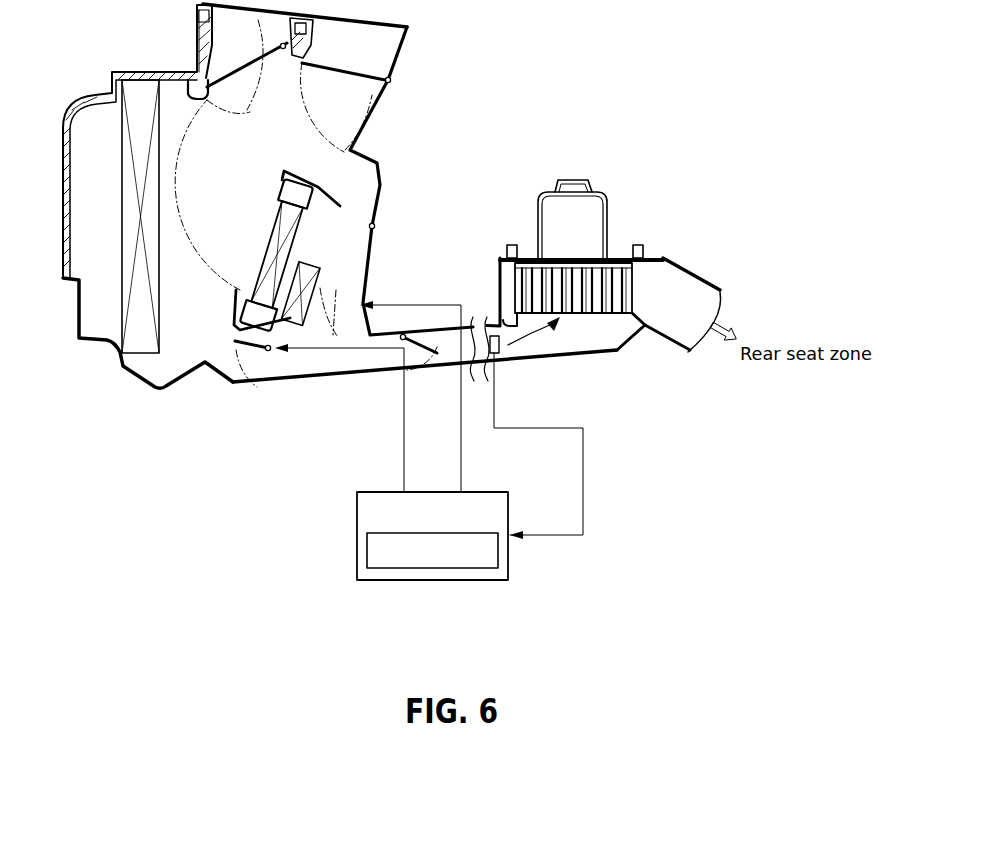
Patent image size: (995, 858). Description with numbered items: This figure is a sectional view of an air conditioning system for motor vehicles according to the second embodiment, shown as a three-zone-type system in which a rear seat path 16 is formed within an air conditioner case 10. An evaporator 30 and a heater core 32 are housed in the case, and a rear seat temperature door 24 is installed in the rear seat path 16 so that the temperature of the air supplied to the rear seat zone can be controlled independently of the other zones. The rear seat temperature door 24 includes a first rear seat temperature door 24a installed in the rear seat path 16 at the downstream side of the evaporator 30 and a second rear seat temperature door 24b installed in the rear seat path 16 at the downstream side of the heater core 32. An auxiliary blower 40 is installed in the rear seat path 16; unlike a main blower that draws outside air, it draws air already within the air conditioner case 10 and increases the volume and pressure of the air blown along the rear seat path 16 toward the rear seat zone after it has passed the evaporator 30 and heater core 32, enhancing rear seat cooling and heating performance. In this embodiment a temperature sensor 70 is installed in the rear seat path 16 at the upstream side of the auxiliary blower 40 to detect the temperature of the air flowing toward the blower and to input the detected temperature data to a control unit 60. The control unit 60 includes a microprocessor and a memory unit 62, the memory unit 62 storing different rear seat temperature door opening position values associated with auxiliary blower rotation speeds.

The air conditioner case 10 is at (85, 100).
The rear seat path 16 is at (393, 360).
The rear seat temperature door 24 is at (336, 399).
The first rear seat temperature door 24a is at (252, 350).
The second rear seat temperature door 24b is at (333, 332).
The evaporator 30 is at (142, 347).
The heater core 32 is at (288, 252).
The auxiliary blower 40 is at (527, 292).
The control unit 60 is at (357, 512).
The memory unit 62 is at (367, 551).
The temperature sensor 70 is at (503, 347).